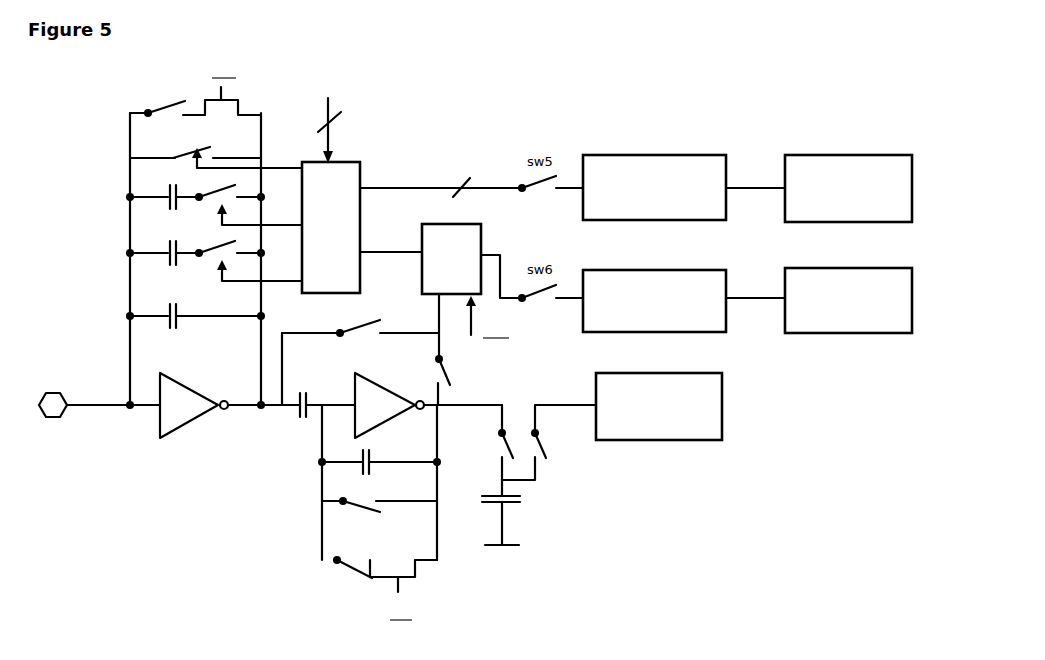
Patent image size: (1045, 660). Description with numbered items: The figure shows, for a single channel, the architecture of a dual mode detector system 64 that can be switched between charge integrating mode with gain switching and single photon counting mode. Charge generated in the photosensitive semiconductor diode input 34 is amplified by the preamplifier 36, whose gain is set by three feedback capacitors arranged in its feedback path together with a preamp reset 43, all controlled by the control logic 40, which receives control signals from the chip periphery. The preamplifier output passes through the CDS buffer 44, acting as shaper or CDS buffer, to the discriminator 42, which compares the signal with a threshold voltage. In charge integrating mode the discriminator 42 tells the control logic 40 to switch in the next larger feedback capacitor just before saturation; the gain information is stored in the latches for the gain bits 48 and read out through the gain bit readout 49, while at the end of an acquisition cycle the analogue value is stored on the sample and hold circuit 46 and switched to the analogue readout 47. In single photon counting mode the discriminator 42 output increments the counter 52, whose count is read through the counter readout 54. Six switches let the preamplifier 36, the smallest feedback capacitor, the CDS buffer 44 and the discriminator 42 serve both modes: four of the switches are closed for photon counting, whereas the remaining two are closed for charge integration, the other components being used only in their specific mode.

The photosensitive semiconductor diode input 34 is at (40, 420).
The preamplifier 36 is at (192, 418).
The control logic 40 is at (373, 158).
The discriminator 42 is at (493, 220).
The preamp reset 43 is at (128, 180).
The CDS buffer 44 is at (407, 418).
The sample and hold circuit 46 is at (538, 466).
The analogue readout 47 is at (722, 392).
The latches for the gain bits 48 is at (612, 155).
The gain bit readout 49 is at (932, 170).
The counter 52 is at (686, 268).
The counter readout 54 is at (932, 283).
The dual mode detector system 64 is at (504, 121).